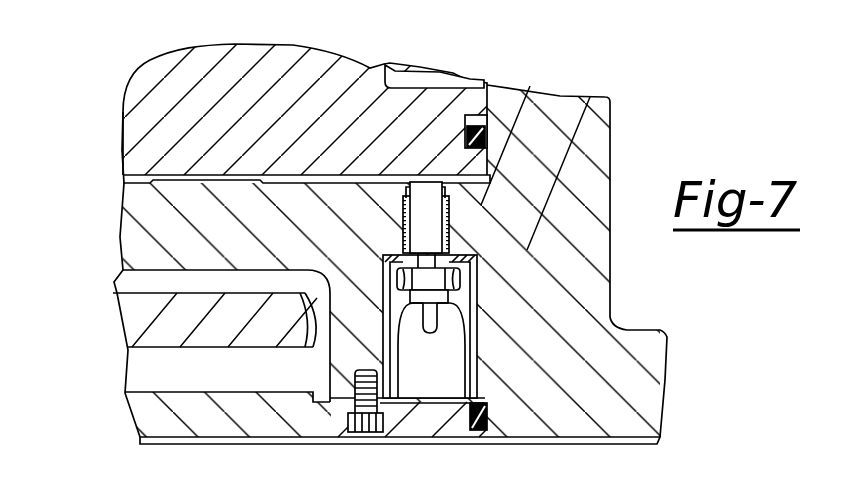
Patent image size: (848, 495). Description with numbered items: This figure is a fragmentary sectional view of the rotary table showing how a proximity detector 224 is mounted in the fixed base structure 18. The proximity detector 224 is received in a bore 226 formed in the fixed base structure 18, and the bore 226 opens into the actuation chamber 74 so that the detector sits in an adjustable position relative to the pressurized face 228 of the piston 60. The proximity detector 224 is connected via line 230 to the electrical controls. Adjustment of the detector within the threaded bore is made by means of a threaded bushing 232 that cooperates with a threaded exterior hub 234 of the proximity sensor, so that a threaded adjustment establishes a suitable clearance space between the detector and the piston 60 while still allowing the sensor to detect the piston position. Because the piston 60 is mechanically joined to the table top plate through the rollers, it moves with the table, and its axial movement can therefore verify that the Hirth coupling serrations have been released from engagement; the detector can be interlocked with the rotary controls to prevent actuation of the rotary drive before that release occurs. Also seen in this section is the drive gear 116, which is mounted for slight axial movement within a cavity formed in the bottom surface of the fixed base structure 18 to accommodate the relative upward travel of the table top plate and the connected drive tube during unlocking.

The fixed base structure 18 is at (578, 437).
The piston 60 is at (378, 176).
The actuation chamber 74 is at (410, 174).
The drive gear 116 is at (128, 348).
The proximity detector 224 is at (451, 219).
The bore 226 is at (468, 295).
The pressurized face 228 is at (278, 176).
The line 230 is at (436, 336).
The threaded bushing 232 is at (452, 193).
The threaded exterior hub 234 is at (443, 195).